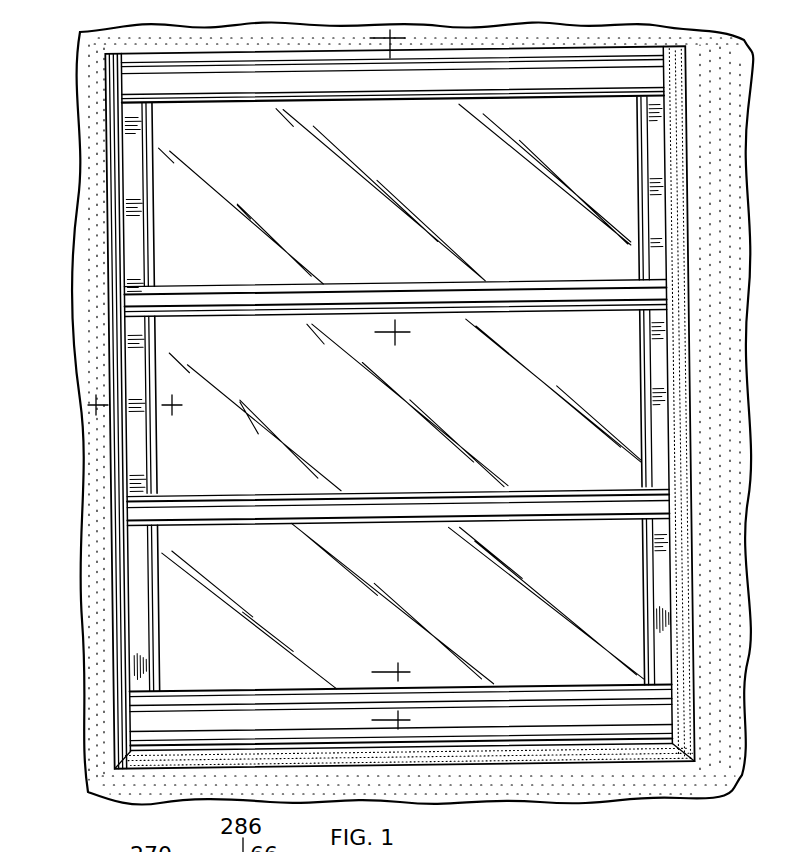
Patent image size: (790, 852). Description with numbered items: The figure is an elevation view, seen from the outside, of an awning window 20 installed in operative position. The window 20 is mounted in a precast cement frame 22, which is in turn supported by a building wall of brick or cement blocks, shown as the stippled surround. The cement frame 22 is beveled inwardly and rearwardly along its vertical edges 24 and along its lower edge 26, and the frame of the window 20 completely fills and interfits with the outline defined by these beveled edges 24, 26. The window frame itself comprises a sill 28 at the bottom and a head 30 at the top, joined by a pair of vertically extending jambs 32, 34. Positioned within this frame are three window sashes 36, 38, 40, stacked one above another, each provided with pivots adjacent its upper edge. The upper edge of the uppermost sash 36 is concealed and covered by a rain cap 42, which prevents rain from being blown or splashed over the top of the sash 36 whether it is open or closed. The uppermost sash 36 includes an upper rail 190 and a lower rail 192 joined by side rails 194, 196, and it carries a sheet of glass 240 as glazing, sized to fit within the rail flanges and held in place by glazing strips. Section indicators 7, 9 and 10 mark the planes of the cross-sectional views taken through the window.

The window 20 is at (112, 133).
The precast cement frame 22 is at (92, 510).
The beveled vertical edges 24 is at (118, 312).
The beveled lower edge 26 is at (154, 757).
The sill 28 is at (457, 717).
The head 30 is at (140, 57).
The jamb 32 is at (123, 184).
The jamb 34 is at (668, 262).
The uppermost window sash 36 is at (658, 205).
The window sash 38 is at (662, 423).
The window sash 40 is at (664, 598).
The rain cap 42 is at (463, 78).
The upper rail 190 is at (597, 88).
The lower rail 192 is at (570, 290).
The side rail 194 is at (210, 231).
The side rail 196 is at (650, 165).
The glass 240 is at (363, 239).
The section line 7 is at (404, 696).
The section line 9 is at (135, 393).
The section line 10 is at (410, 187).